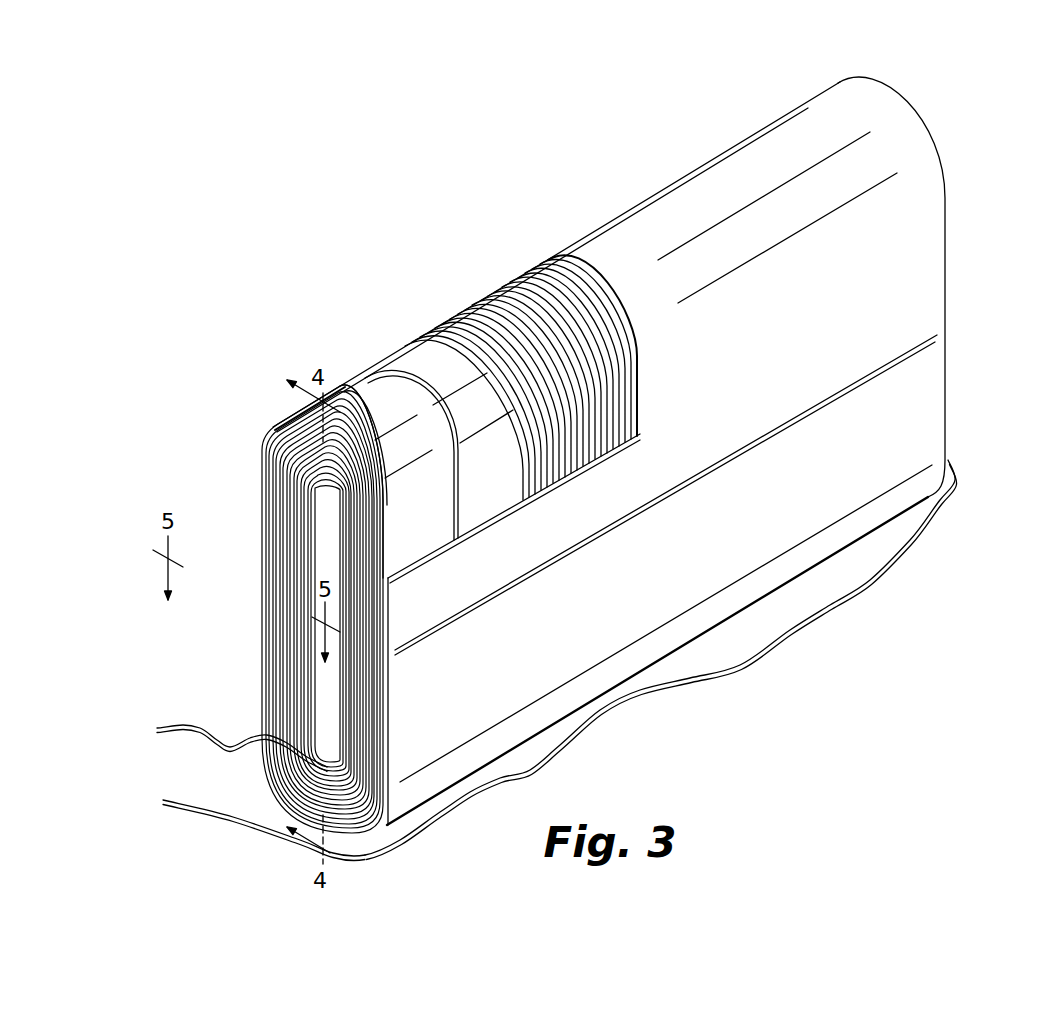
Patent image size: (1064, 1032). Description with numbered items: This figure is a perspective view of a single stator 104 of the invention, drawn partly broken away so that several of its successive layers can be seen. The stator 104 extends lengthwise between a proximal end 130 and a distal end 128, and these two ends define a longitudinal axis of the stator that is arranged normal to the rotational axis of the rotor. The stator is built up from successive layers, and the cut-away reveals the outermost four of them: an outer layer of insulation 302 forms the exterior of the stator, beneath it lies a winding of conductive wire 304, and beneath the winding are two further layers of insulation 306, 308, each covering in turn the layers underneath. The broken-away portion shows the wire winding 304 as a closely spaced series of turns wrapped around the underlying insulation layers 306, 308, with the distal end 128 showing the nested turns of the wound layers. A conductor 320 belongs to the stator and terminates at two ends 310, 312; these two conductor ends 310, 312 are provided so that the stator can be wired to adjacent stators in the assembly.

The stator 104 is at (372, 185).
The distal end 128 is at (262, 445).
The proximal end 130 is at (945, 298).
The outer layer of insulation 302 is at (622, 238).
The winding of conductive wire 304 is at (403, 330).
The layer of insulation 306 is at (403, 377).
The layer of insulation 308 is at (303, 410).
The end of conductor 310 is at (158, 728).
The end of conductor 312 is at (165, 805).
The conductor 320 is at (693, 678).